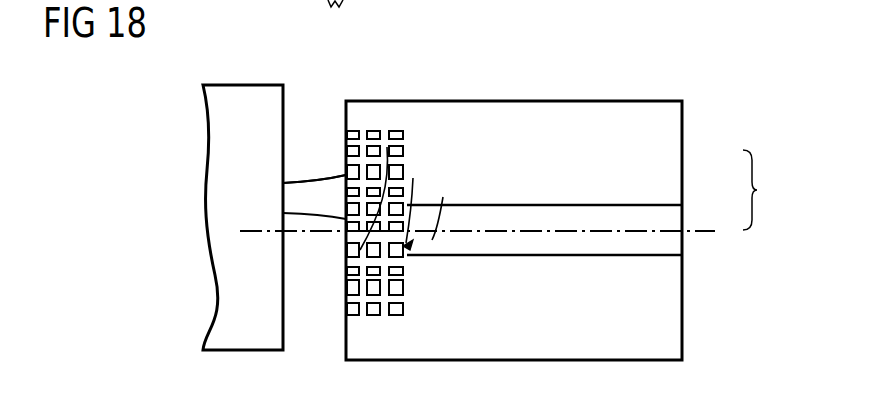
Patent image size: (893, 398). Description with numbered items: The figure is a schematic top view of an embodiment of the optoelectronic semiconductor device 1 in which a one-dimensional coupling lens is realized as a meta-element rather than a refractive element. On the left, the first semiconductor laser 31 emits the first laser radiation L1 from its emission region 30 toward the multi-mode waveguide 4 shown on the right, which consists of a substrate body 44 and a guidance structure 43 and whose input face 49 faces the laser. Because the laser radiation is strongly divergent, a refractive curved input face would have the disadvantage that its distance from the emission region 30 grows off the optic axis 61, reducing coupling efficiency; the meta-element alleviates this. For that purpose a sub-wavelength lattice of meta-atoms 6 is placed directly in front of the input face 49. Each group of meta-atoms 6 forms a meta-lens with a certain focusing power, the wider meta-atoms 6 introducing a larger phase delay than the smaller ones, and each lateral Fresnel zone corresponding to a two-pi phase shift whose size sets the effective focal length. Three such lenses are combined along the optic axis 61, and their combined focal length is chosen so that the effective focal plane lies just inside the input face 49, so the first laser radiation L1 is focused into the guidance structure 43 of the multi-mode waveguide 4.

The optoelectronic semiconductor device 1 is at (714, 83).
The multi-mode waveguide 4 is at (762, 190).
The meta-atom 6 is at (373, 130).
The emission region 30 is at (283, 199).
The first semiconductor laser 31 is at (242, 93).
The guidance structure 43 is at (676, 218).
The substrate body 44 is at (676, 160).
The input face 49 is at (408, 247).
The optic axis 61 is at (702, 232).
The first laser radiation L1 is at (300, 195).